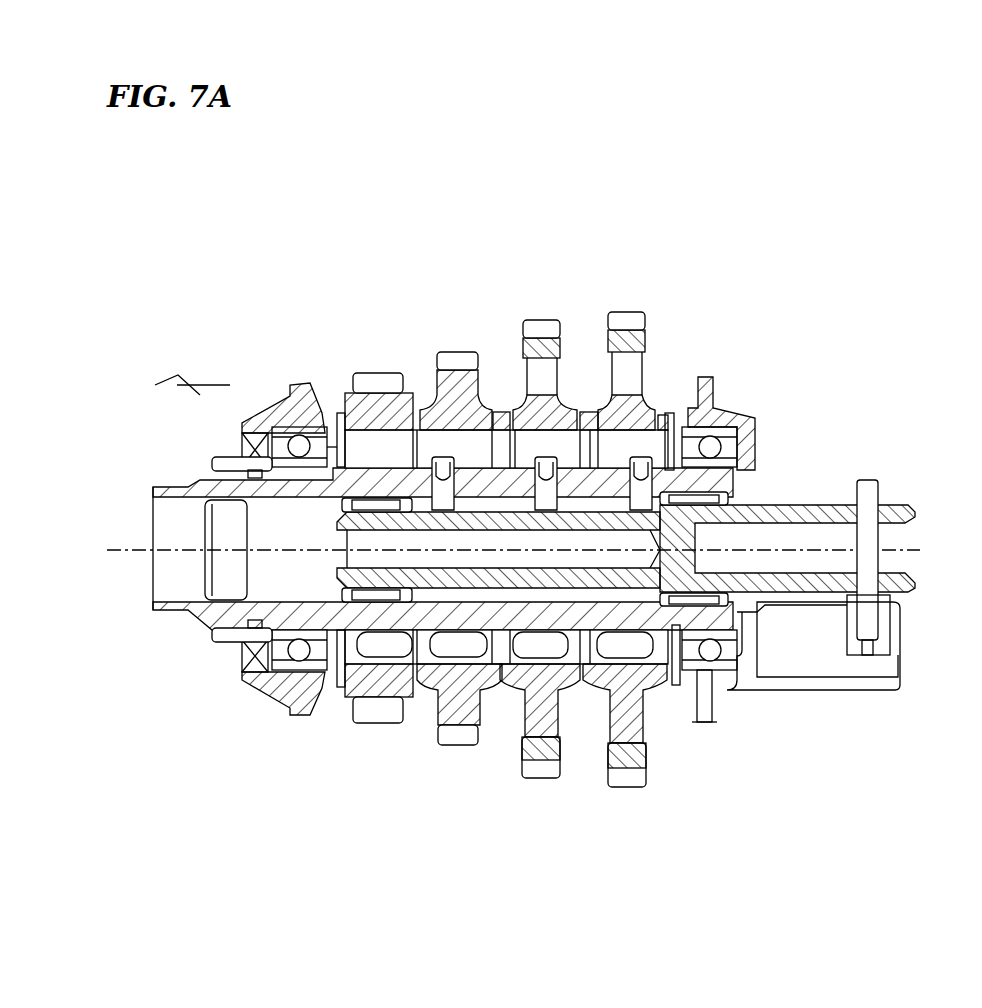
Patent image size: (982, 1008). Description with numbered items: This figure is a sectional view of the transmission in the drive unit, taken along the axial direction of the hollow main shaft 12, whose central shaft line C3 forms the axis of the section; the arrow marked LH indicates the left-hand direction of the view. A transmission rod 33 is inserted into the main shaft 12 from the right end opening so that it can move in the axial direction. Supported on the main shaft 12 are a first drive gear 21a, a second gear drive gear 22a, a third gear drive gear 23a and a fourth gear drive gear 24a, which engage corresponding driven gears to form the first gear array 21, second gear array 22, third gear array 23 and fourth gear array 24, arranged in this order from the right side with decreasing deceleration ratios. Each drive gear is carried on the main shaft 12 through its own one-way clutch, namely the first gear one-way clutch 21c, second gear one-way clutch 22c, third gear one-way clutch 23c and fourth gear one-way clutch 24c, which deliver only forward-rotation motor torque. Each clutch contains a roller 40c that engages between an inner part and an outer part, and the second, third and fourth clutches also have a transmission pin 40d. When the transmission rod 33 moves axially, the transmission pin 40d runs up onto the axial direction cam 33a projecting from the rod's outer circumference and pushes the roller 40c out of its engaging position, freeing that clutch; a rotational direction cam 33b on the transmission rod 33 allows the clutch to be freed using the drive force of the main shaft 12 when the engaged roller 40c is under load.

The main shaft 12 is at (200, 615).
The first gear array 21 is at (367, 521).
The second gear array 22 is at (461, 520).
The third gear array 23 is at (562, 501).
The fourth gear array 24 is at (661, 510).
The first drive gear 21a is at (375, 380).
The second gear drive gear 22a is at (457, 360).
The third gear drive gear 23a is at (543, 325).
The fourth gear drive gear 24a is at (627, 322).
The first gear one-way clutch 21c is at (387, 647).
The second gear one-way clutch 22c is at (462, 647).
The third gear one-way clutch 23c is at (557, 648).
The fourth gear one-way clutch 24c is at (640, 643).
The transmission rod 33 is at (626, 523).
The axial direction cam 33a is at (530, 508).
The rotational direction cam 33b is at (512, 508).
The roller 40c is at (383, 445).
The transmission pin 40d is at (432, 508).
The central shaft line C3 is at (123, 540).
The left-hand direction LH is at (175, 389).